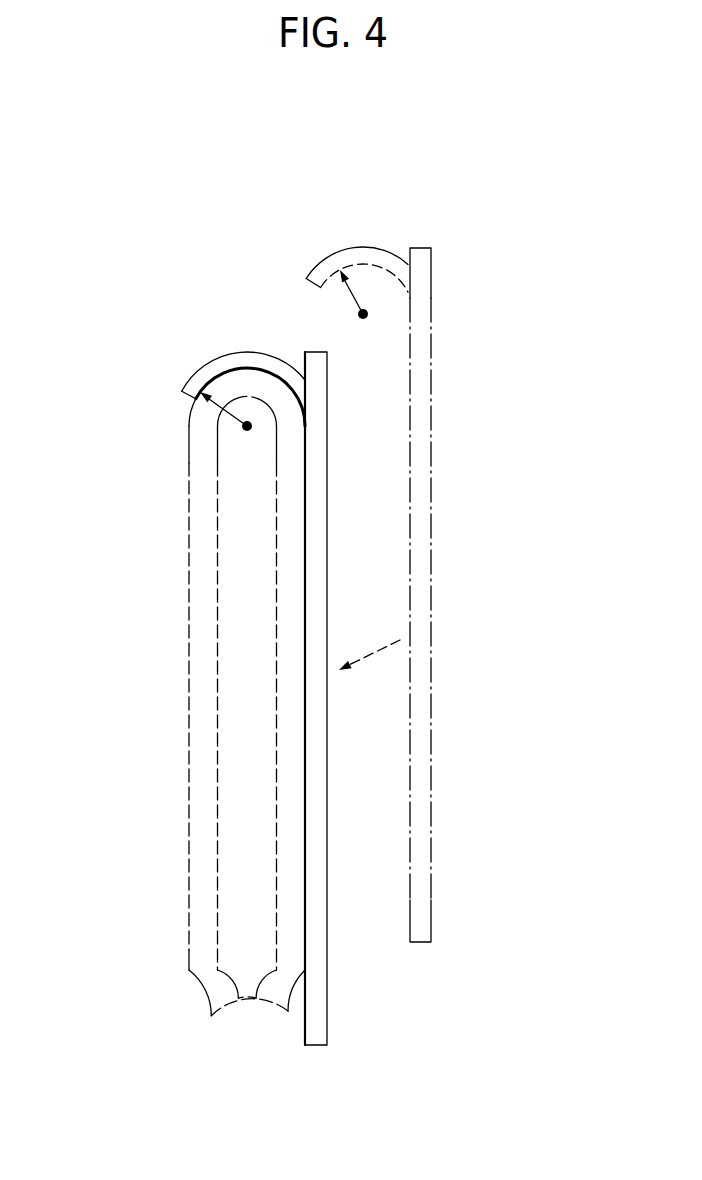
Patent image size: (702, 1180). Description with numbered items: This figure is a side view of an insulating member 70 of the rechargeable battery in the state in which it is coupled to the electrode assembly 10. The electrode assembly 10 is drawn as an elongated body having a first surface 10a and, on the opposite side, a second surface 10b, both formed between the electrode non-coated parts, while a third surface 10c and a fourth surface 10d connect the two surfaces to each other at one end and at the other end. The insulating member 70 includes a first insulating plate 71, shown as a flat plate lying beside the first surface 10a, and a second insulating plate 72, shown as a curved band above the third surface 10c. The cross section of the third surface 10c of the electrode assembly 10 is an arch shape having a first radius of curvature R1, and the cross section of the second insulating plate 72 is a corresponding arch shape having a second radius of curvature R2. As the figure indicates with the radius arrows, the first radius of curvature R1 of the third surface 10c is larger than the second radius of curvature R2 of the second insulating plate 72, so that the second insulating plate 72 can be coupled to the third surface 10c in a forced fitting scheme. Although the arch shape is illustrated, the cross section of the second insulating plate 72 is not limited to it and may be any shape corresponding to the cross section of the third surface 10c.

The electrode assembly 10 is at (253, 703).
The first surface 10a is at (307, 952).
The second surface 10b is at (198, 832).
The third surface 10c is at (220, 371).
The fourth surface 10d is at (247, 1030).
The insulating member 70 is at (422, 561).
The first insulating plate 71 is at (422, 500).
The second insulating plate 72 is at (362, 257).
The first radius of curvature R1 is at (226, 418).
The second radius of curvature R2 is at (363, 294).